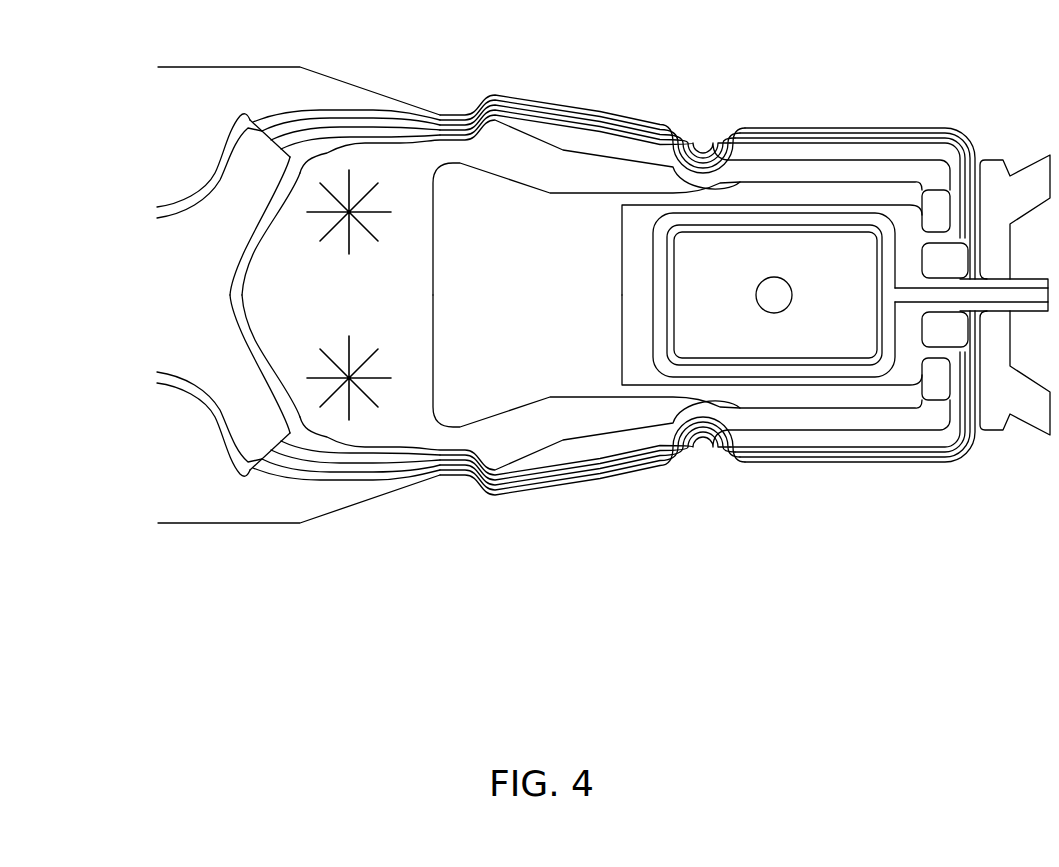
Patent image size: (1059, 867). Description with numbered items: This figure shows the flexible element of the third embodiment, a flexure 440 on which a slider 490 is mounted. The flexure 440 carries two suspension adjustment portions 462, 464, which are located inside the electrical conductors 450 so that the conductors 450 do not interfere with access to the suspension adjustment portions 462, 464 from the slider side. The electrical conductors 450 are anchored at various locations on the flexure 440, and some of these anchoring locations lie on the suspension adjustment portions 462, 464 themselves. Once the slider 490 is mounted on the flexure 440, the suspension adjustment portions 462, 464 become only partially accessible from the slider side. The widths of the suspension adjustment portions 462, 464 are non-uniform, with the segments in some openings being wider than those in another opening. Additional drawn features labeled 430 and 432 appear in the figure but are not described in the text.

The hole 430 is at (780, 313).
The weld points 432 is at (350, 213).
The flexure 440 is at (503, 157).
The electrical conductors 450 is at (625, 110).
The suspension adjustment portion 462 is at (848, 176).
The suspension adjustment portion 464 is at (790, 425).
The slider 490 is at (618, 297).